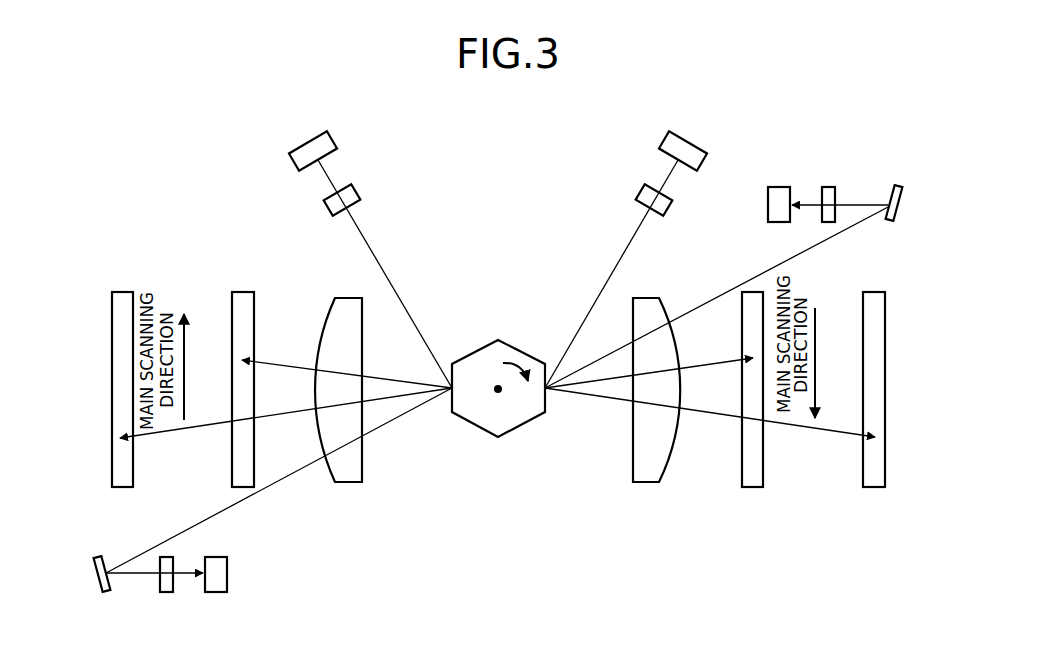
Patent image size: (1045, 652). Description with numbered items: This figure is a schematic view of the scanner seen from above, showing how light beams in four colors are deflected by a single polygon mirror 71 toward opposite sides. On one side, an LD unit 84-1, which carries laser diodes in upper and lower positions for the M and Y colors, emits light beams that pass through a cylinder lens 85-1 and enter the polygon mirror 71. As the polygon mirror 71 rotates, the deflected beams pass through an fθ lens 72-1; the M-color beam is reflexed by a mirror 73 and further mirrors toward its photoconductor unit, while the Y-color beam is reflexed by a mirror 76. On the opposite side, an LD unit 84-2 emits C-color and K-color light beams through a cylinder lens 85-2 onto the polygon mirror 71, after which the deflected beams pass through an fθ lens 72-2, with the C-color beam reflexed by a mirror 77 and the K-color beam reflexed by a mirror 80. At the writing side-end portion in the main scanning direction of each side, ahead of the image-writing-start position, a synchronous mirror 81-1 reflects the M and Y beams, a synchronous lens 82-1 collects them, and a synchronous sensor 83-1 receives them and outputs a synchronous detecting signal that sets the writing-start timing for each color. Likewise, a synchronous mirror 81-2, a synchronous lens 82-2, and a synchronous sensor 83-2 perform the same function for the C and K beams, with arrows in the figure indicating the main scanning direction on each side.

The polygon mirror 71 is at (478, 348).
The fθ lens 72-1 is at (350, 484).
The fθ lens 72-2 is at (644, 484).
The mirror 73 is at (243, 291).
The mirror 76 is at (123, 489).
The mirror 77 is at (752, 489).
The mirror 80 is at (874, 489).
The synchronous mirror 81-1 is at (102, 595).
The synchronous mirror 81-2 is at (893, 185).
The synchronous lens 82-1 is at (167, 594).
The synchronous lens 82-2 is at (830, 186).
The synchronous sensor 83-1 is at (219, 594).
The synchronous sensor 83-2 is at (777, 186).
The LD unit 84-1 is at (338, 140).
The LD unit 84-2 is at (658, 140).
The cylinder lens 85-1 is at (361, 194).
The cylinder lens 85-2 is at (635, 194).